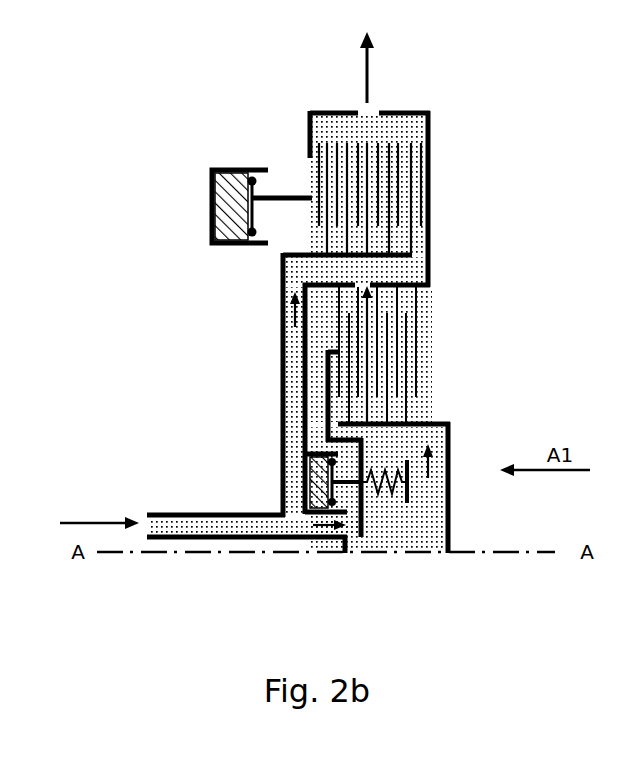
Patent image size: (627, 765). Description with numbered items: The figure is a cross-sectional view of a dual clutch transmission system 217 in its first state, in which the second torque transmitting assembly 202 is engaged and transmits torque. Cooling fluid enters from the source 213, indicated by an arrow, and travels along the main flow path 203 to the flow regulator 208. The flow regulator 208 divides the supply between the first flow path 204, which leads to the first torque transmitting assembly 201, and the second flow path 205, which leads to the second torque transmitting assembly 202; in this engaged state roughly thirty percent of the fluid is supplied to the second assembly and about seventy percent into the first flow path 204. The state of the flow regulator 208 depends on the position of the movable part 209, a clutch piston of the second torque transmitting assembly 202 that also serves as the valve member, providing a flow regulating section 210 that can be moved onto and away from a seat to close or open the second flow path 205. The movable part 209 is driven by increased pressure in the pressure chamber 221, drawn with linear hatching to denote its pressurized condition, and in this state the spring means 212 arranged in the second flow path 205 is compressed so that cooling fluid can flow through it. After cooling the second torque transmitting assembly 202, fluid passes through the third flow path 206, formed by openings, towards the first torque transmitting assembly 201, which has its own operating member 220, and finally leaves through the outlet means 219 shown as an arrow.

The dual clutch transmission system 217 is at (163, 139).
The first torque transmitting assembly 201 is at (455, 210).
The second torque transmitting assembly 202 is at (503, 370).
The main flow path 203 is at (222, 527).
The first flow path 204 is at (297, 355).
The second flow path 205 is at (437, 436).
The third flow path 206 is at (369, 312).
The flow regulator 208 is at (337, 580).
The movable part 209 is at (327, 410).
The flow regulating section 210 is at (375, 523).
The spring means 212 is at (412, 486).
The source 213 is at (99, 513).
The outlet means 219 is at (385, 68).
The operating member 220 is at (291, 195).
The pressure chamber 221 is at (312, 487).